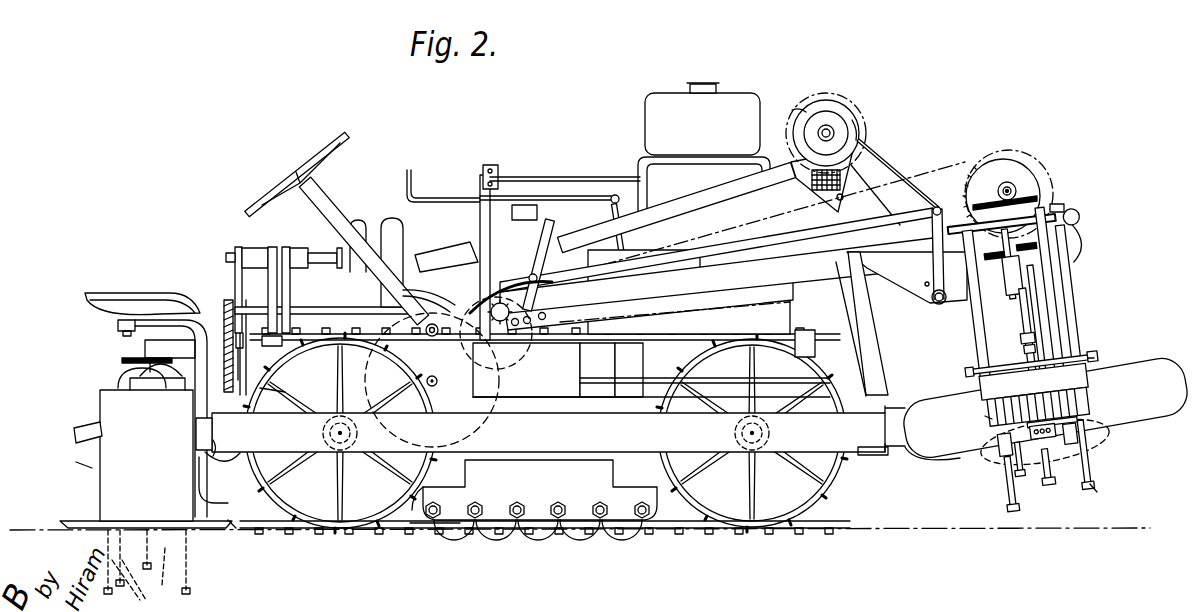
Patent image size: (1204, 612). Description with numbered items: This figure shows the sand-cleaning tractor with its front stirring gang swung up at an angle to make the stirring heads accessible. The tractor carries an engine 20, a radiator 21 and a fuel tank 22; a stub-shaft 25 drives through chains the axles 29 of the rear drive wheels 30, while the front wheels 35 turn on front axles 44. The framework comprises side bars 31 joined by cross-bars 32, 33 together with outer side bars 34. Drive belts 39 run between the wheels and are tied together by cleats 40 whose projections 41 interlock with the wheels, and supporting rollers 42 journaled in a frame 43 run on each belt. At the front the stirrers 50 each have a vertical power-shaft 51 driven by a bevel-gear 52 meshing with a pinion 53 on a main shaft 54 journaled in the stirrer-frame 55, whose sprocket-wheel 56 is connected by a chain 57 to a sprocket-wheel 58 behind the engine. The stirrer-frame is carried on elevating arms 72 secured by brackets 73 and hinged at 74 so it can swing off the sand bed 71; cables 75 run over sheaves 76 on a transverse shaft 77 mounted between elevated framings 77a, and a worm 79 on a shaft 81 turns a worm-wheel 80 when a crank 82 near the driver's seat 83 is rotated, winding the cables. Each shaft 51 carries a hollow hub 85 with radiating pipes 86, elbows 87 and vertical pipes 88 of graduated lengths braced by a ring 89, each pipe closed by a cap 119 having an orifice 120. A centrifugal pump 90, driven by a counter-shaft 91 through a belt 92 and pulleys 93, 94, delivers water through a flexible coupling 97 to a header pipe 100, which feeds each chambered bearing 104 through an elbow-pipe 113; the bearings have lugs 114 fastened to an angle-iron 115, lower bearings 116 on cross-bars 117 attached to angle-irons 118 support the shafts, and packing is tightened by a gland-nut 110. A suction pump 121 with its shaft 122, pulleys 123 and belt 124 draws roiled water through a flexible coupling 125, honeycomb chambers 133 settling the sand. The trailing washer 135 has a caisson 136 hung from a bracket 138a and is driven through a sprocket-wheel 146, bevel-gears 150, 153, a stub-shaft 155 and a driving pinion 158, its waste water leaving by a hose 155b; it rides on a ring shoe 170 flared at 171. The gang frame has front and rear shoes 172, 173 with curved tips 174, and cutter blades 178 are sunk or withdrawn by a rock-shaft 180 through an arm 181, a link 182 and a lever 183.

The engine 20 is at (792, 305).
The radiator 21 is at (882, 318).
The fuel tank 22 is at (740, 93).
The stub-shaft 25 is at (432, 376).
The axle 29 is at (323, 433).
The rear drive wheel 30 is at (258, 501).
The side bar 31 is at (548, 398).
The front cross-bar 32 is at (892, 401).
The rear cross-bar 33 is at (197, 432).
The outer side bar 34 is at (622, 448).
The front wheel 35 is at (845, 494).
The tractor drive belt 39 is at (582, 532).
The cleat 40 is at (466, 533).
The projection 41 is at (672, 338).
The tractor-supporting roller 42 is at (546, 518).
The roller frame 43 is at (440, 490).
The front double-wheel axle 44 is at (738, 433).
The sand-stirrer 50 is at (1113, 493).
The vertical power-shaft 51 is at (1021, 340).
The bevel-gear 52 is at (1025, 197).
The pinion 53 is at (998, 192).
The horizontal main shaft 54 is at (1008, 186).
The gang stirrer-frame 55 is at (1064, 206).
The sprocket-wheel 56 is at (964, 190).
The chain 57 is at (932, 169).
The sprocket-wheel 58 is at (649, 300).
The sand bed 71 is at (984, 530).
The elevating arm 72 is at (716, 276).
The bracket 73 is at (907, 277).
The hinge 74 is at (518, 348).
The cable 75 is at (887, 201).
The sheave 76 is at (860, 126).
The transverse shaft 77 is at (828, 118).
The elevated framing 77a is at (684, 208).
The worm 79 is at (808, 200).
The worm-wheel 80 is at (800, 108).
The worm shaft 81 is at (595, 182).
The crank 82 is at (463, 256).
The driver's seat 83 is at (131, 294).
The hollow head 85 is at (1073, 413).
The short pipe 86 is at (998, 440).
The elbow 87 is at (997, 458).
The vertical pipe 88 is at (150, 540).
The stiffening ring 89 is at (1080, 425).
The centrifugal force-pump 90 is at (360, 226).
The counter-shaft 91 is at (229, 257).
The belt 92 is at (237, 284).
The pulley 93 is at (243, 250).
The pulley 94 is at (243, 343).
The flexible coupling 97 is at (452, 300).
The distributing header pipe 100 is at (1079, 228).
The chambered bearing 104 is at (1032, 293).
The gland-nut 110 is at (140, 590).
The elbow-pipe 113 is at (1081, 260).
The lug 114 is at (1007, 266).
The angle-iron 115 is at (1010, 298).
The bearing 116 is at (1025, 379).
The cross-bar 117 is at (1071, 352).
The angle-iron 118 is at (1092, 359).
The cap 119 is at (1008, 488).
The orifice 120 is at (1043, 496).
The suction pump 121 is at (404, 226).
The pump shaft 122 is at (304, 254).
The pulley 123 is at (297, 246).
The belt 124 is at (278, 345).
The flexible coupling 125 is at (548, 256).
The honeycomb chamber 133 is at (988, 420).
The trailing washer 135 is at (83, 471).
The caisson 136 is at (146, 455).
The bracket 138a is at (232, 452).
The sprocket-wheel 146 is at (122, 361).
The bevel-gear 150 is at (177, 391).
The bevel-gear 153 is at (120, 372).
The stub-shaft 155 is at (285, 392).
The hose 155b is at (88, 426).
The driving pinion 158 is at (204, 306).
The shoe 170 is at (145, 521).
The flared border 171 is at (236, 528).
The front shoe 172 is at (1156, 421).
The rear shoe 173 is at (934, 463).
The curved tip 174 is at (893, 457).
The cutter blade 178 is at (1115, 449).
The rock-shaft 180 is at (940, 304).
The upstanding arm 181 is at (929, 260).
The link 182 is at (794, 239).
The lever 183 is at (546, 230).